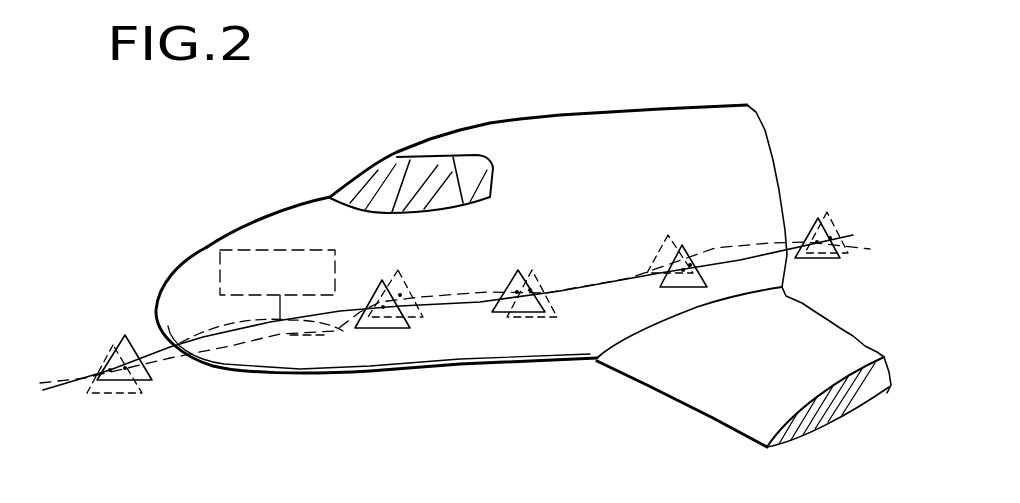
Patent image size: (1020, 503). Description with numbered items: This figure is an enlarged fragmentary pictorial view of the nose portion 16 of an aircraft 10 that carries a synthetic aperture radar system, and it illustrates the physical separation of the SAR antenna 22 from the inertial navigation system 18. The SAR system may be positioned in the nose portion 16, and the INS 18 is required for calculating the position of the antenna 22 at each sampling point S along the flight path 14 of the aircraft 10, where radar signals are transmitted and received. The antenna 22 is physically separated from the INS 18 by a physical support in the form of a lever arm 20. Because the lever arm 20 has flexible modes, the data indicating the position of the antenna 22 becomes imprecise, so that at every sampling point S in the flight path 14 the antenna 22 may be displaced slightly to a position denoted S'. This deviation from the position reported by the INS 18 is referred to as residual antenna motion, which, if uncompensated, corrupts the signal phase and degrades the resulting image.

The aircraft 10 is at (561, 112).
The flight path 14 is at (447, 306).
The nose portion 16 is at (206, 247).
The inertial navigation system 18 is at (299, 250).
The lever arm 20 is at (280, 311).
The antenna 22 is at (308, 337).
The sampling point S is at (468, 286).
The displaced antenna position S' is at (469, 293).